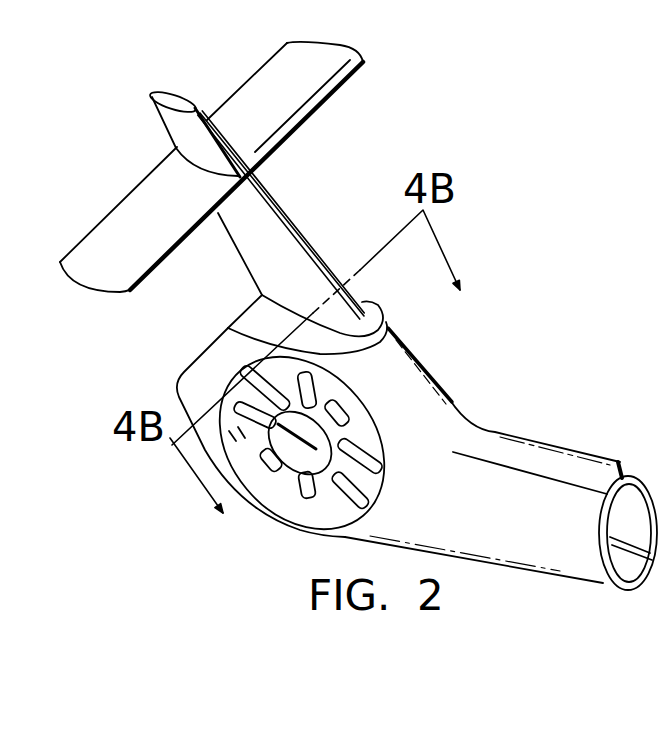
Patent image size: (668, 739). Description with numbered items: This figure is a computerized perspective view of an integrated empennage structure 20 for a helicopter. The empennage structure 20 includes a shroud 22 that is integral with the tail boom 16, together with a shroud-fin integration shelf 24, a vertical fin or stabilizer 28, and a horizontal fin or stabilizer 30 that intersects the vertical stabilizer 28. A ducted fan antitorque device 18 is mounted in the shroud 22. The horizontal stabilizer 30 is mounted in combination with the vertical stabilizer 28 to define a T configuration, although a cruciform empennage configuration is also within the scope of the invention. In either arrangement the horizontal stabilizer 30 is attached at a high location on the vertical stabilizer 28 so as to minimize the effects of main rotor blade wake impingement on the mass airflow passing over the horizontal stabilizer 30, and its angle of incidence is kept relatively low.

The tail boom 16 is at (574, 440).
The ducted fan antitorque device 18 is at (283, 497).
The integrated empennage structure 20 is at (176, 361).
The shroud 22 is at (460, 392).
The shroud-fin integration shelf 24 is at (253, 310).
The vertical stabilizer 28 is at (283, 235).
The horizontal stabilizer 30 is at (257, 92).